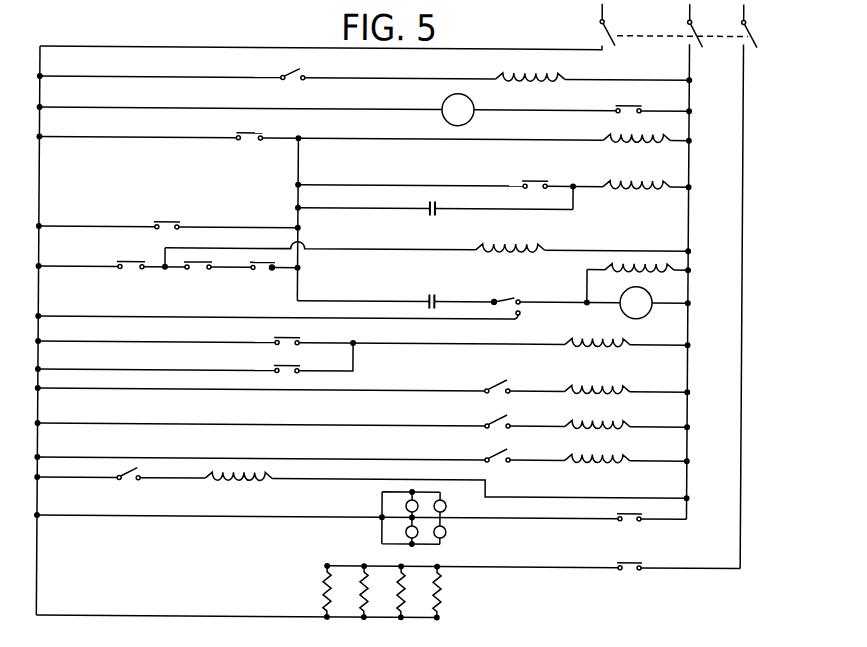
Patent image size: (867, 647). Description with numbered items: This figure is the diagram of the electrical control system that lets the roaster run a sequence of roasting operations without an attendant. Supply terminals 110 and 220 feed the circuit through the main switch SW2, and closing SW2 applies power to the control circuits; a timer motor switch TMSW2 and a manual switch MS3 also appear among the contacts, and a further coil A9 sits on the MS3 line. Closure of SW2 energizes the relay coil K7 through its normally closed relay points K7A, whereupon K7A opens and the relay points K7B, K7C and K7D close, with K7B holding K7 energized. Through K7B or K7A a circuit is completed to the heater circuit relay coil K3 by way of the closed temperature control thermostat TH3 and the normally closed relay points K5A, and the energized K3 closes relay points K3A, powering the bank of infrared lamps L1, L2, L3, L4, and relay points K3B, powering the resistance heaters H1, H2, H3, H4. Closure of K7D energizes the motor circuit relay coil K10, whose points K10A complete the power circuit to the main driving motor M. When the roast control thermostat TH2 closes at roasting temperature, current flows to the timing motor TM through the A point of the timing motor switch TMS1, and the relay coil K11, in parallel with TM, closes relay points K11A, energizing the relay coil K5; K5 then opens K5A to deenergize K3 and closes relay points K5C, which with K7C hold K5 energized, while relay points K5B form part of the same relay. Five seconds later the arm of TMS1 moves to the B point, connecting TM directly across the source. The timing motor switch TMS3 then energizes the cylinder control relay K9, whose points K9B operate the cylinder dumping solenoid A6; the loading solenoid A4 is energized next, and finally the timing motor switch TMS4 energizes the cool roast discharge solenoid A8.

The 110-volt supply terminal 110 is at (693, 12).
The 220-volt supply terminal 220 is at (747, 12).
The main switch SW2 is at (691, 36).
The timer motor switch TMSW2 is at (291, 84).
The roaster loading solenoid A4 is at (531, 70).
The main driving motor M is at (458, 110).
The relay points K10A is at (628, 103).
The relay points K7A is at (249, 129).
The relay coil K7 is at (638, 130).
The relay points K5A is at (535, 178).
The heater circuit relay coil K3 is at (638, 177).
The temperature control thermostat TH3 is at (429, 217).
The relay points K7B is at (167, 219).
The relay coil K5 is at (512, 241).
The relay points K11A is at (130, 274).
The relay points K5C is at (198, 275).
The relay points K7C is at (262, 275).
The relay coil K11 is at (638, 260).
The roast control thermostat TH2 is at (428, 293).
The timing motor switch TMS1 is at (486, 309).
The A point of timing motor switch TMS1 A is at (522, 297).
The B point of timing motor switch TMS1 B is at (522, 316).
The timing motor TM is at (636, 303).
The relay contact K5B is at (287, 335).
The motor circuit relay coil K10 is at (593, 335).
The relay points K7D is at (287, 377).
The timing motor switch TMS4 is at (490, 396).
The cool roast discharge solenoid A8 is at (596, 382).
The timing motor switch TMS3 is at (491, 431).
The cylinder control relay K9 is at (597, 417).
The relay points K9B is at (493, 464).
The cylinder dumping solenoid A6 is at (597, 451).
The manual switch MS3 is at (122, 485).
The relay coil A9 is at (240, 480).
The infrared lamp L1 is at (403, 506).
The infrared lamp L2 is at (447, 506).
The infrared lamp L3 is at (401, 532).
The infrared lamp L4 is at (447, 533).
The relay points K3A is at (629, 527).
The relay points K3B is at (629, 576).
The resistance heater H1 is at (313, 591).
The resistance heater H2 is at (351, 591).
The resistance heater H3 is at (388, 591).
The resistance heater H4 is at (424, 591).